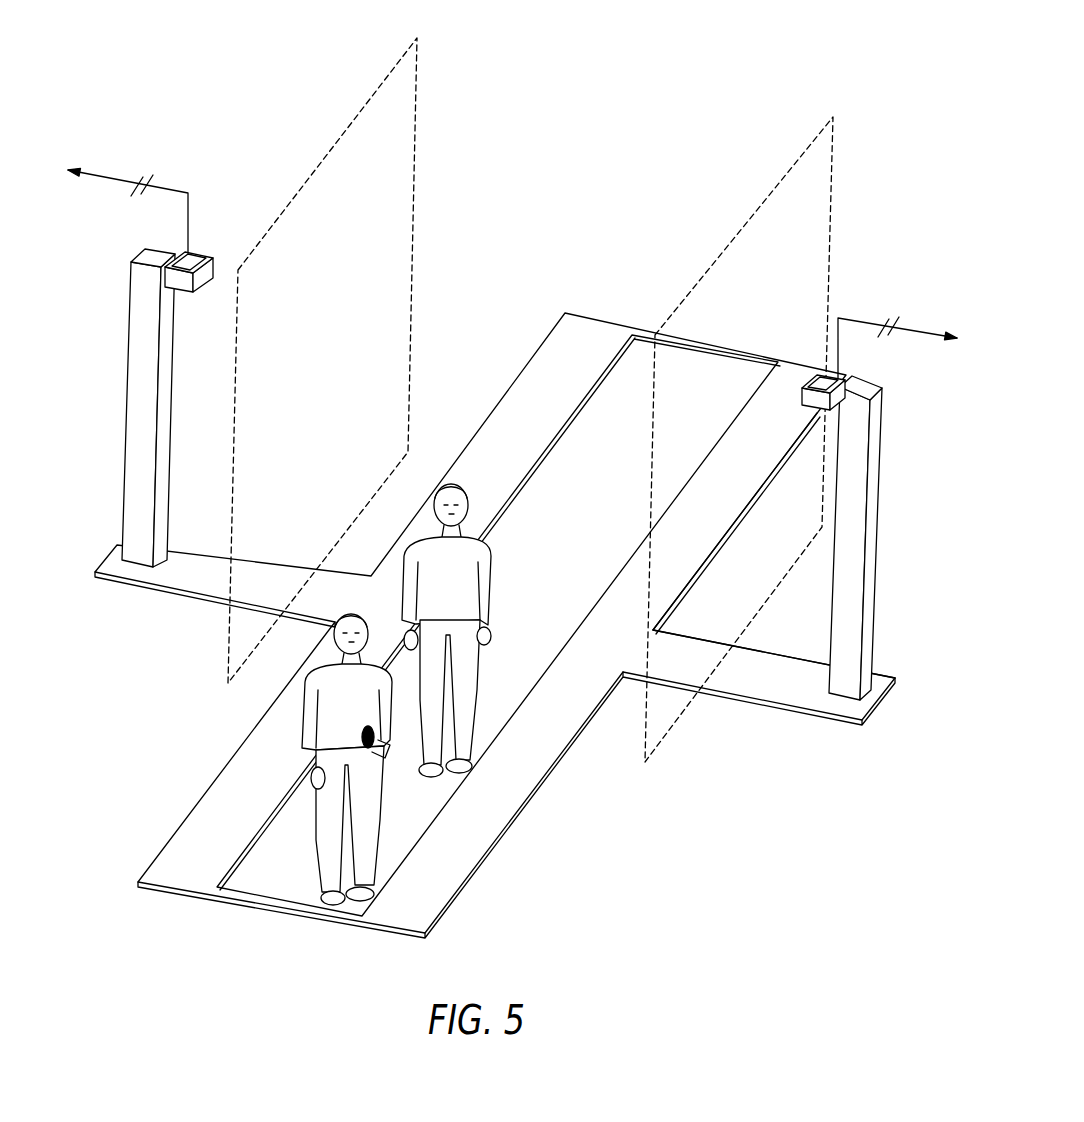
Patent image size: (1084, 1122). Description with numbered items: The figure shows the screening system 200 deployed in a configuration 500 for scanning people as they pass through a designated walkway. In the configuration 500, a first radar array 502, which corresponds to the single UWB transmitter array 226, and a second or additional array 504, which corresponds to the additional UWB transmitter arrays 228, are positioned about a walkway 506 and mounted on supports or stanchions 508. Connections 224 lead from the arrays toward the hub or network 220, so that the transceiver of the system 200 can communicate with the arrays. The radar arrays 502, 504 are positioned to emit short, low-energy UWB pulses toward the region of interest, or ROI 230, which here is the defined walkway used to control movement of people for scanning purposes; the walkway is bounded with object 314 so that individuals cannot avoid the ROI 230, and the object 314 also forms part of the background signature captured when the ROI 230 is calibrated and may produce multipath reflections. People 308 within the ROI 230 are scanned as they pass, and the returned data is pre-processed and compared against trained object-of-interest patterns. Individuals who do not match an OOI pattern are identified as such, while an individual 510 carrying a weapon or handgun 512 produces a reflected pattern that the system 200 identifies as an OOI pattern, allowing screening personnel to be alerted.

The system 200 is at (501, 376).
The hub or network 220 is at (898, 80).
The connections 224 is at (166, 188).
The UWB transmitter array 226 is at (824, 410).
The UWB transmitter arrays 228 is at (182, 292).
The ROI 230 is at (592, 367).
The people 308 is at (519, 642).
The object 314 is at (350, 367).
The configuration 500 is at (495, 488).
The first radar array 502 is at (216, 246).
The second UWB transmitter array 504 is at (603, 328).
The walkway 506 is at (493, 640).
The supports or stanchions 508 is at (140, 428).
The individual 510 is at (336, 759).
The weapon or handgun 512 is at (387, 742).